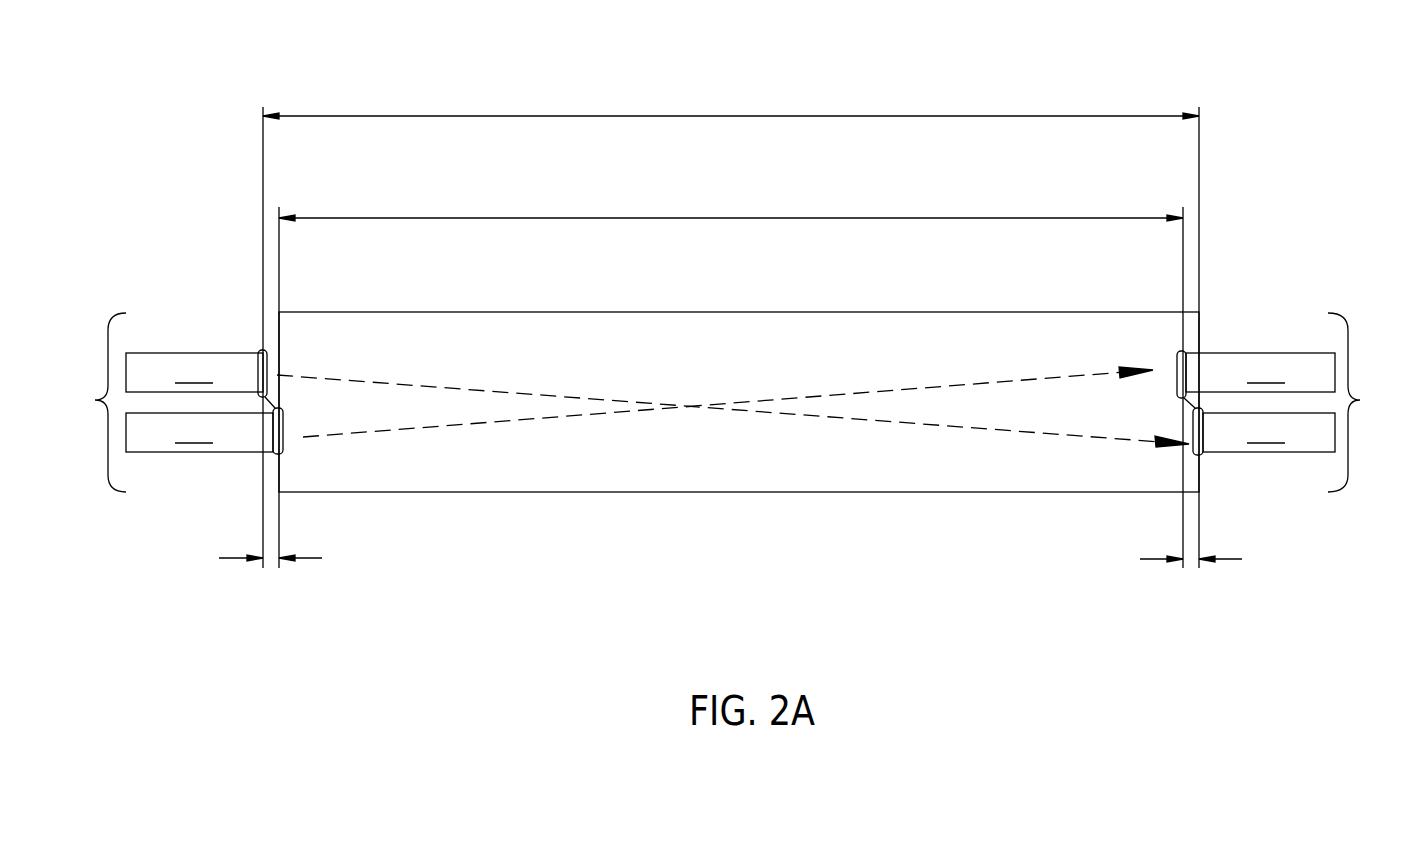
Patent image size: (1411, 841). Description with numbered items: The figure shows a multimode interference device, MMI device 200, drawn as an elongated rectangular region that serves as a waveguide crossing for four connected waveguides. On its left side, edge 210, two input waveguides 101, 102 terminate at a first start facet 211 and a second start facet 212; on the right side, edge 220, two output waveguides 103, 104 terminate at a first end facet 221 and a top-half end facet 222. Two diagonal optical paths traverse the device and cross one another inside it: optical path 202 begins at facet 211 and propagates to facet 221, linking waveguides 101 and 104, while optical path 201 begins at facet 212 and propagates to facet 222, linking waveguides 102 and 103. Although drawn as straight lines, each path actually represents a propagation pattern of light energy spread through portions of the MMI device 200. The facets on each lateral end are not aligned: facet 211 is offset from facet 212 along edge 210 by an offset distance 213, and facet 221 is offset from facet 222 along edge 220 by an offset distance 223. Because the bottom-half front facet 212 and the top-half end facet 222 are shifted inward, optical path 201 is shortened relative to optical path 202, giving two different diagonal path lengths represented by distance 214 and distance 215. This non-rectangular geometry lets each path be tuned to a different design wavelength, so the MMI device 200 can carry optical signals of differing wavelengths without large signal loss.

The waveguide 101 is at (194, 372).
The waveguide 102 is at (199, 432).
The waveguide 103 is at (1260, 372).
The waveguide 104 is at (1269, 432).
The MMI device 200 is at (903, 312).
The optical path 201 is at (462, 424).
The optical path 202 is at (878, 422).
The edge 210 is at (85, 402).
The facet 211 is at (258, 352).
The facet 212 is at (283, 454).
The offset distance 213 is at (247, 557).
The distance 214 is at (745, 218).
The distance 215 is at (688, 116).
The edge 220 is at (1367, 402).
The facet 221 is at (1203, 455).
The facet 222 is at (1178, 352).
The offset distance 223 is at (1213, 556).